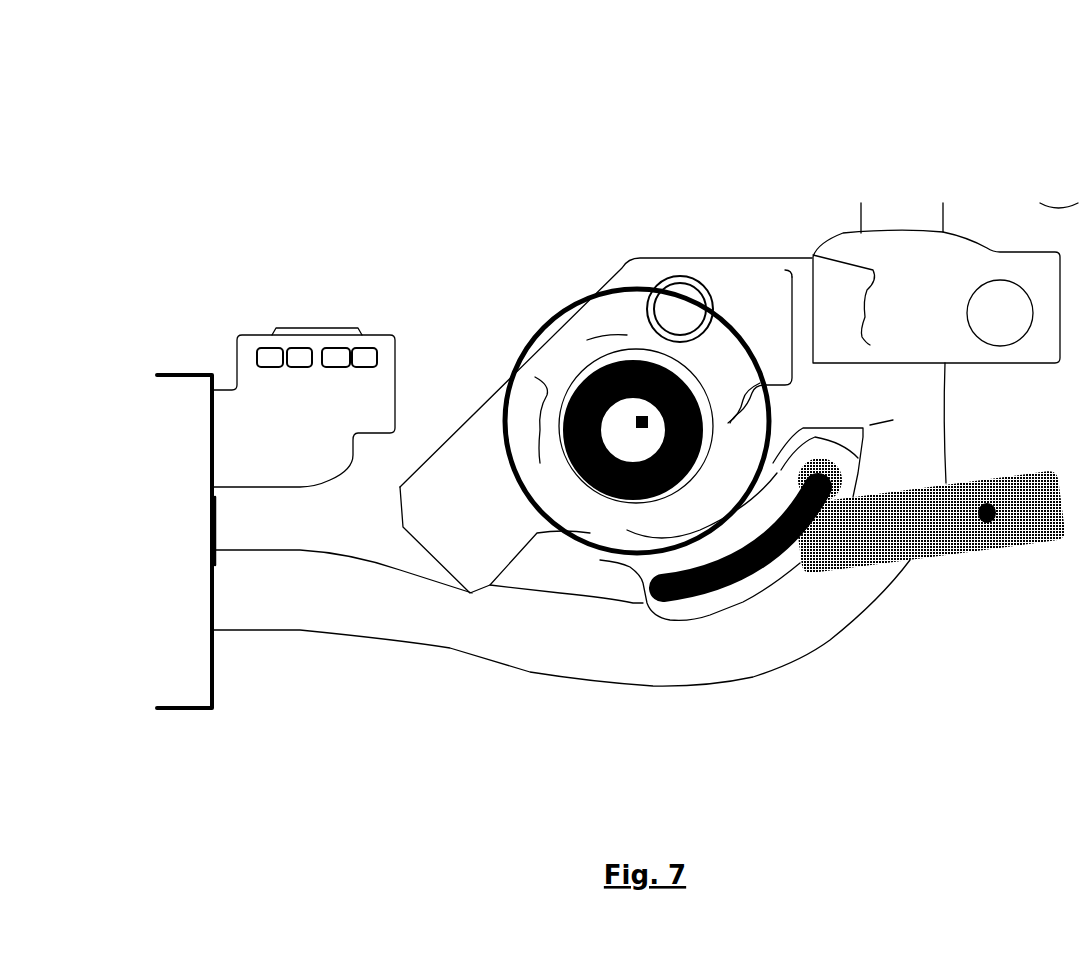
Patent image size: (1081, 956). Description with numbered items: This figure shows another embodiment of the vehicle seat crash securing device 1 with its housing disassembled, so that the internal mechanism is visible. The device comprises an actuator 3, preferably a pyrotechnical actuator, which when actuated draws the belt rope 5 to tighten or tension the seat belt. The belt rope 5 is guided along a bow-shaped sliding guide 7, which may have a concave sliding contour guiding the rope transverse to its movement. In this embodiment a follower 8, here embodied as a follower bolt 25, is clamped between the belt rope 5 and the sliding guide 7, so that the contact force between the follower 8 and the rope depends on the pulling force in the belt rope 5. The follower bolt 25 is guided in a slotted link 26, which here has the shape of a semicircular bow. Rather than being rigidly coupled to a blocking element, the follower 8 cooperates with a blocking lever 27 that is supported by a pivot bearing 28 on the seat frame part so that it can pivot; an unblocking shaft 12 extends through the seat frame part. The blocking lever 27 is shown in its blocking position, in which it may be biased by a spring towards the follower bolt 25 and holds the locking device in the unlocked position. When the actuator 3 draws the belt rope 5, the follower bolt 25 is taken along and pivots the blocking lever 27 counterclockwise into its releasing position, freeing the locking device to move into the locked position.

The vehicle seat crash securing device 1 is at (749, 104).
The actuator 3 is at (399, 518).
The belt rope 5 is at (610, 647).
The sliding guide 7 is at (677, 558).
The follower 8 is at (833, 458).
The unblocking shaft 12 is at (988, 503).
The follower bolt 25 is at (832, 458).
The slotted link 26 is at (745, 580).
The blocking lever 27 is at (920, 537).
The pivot bearing 28 is at (997, 525).